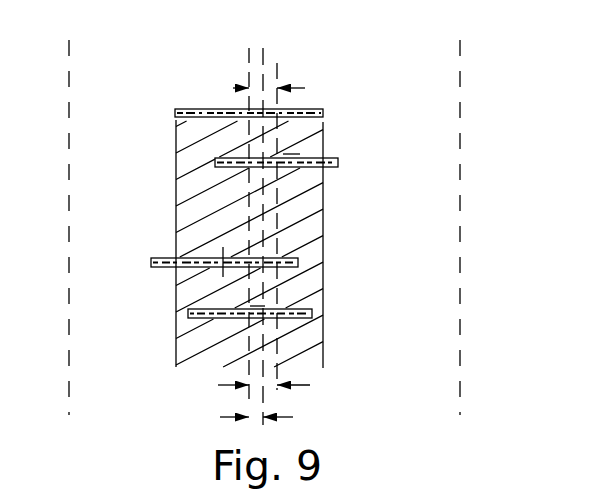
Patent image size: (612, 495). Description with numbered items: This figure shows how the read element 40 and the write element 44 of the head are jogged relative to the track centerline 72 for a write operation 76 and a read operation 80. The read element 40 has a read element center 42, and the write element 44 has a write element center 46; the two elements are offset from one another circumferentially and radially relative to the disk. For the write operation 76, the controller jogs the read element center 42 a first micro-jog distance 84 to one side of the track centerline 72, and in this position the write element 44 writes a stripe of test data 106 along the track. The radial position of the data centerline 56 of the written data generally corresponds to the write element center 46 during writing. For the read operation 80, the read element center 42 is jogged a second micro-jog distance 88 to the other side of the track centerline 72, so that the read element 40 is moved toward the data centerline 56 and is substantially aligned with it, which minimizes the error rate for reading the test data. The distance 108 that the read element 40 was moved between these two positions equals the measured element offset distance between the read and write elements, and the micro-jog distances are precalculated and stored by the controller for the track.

The read element 40 is at (334, 158).
The read element center 42 is at (283, 153).
The write element 44 is at (311, 112).
The write element center 46 is at (248, 109).
The data centerline 56 is at (247, 60).
The track centerline 72 is at (263, 62).
The write operation 76 is at (400, 140).
The read operation 80 is at (372, 277).
The first micro-jog distance 84 is at (298, 87).
The second micro-jog distance 88 is at (232, 414).
The stripe of test data 106 is at (323, 223).
The distance 108 is at (300, 386).